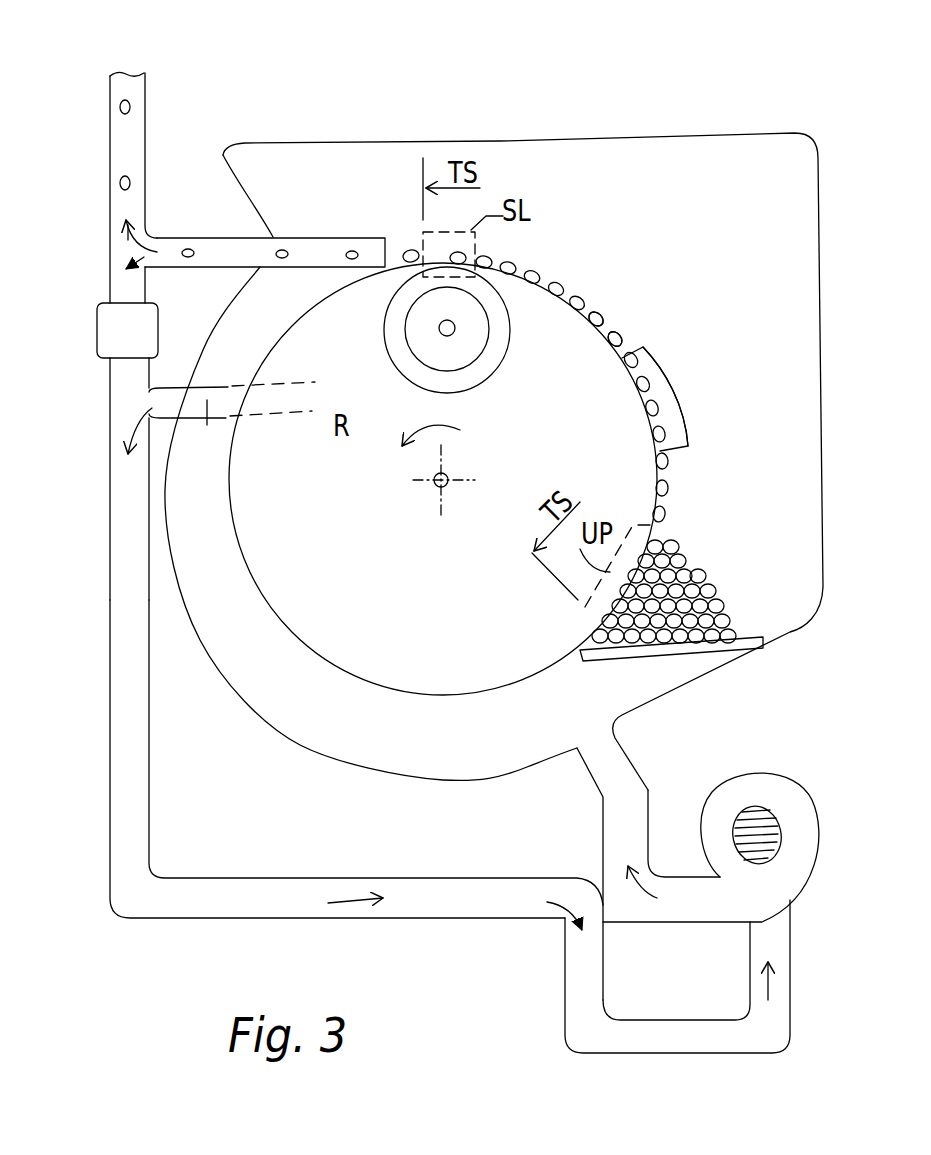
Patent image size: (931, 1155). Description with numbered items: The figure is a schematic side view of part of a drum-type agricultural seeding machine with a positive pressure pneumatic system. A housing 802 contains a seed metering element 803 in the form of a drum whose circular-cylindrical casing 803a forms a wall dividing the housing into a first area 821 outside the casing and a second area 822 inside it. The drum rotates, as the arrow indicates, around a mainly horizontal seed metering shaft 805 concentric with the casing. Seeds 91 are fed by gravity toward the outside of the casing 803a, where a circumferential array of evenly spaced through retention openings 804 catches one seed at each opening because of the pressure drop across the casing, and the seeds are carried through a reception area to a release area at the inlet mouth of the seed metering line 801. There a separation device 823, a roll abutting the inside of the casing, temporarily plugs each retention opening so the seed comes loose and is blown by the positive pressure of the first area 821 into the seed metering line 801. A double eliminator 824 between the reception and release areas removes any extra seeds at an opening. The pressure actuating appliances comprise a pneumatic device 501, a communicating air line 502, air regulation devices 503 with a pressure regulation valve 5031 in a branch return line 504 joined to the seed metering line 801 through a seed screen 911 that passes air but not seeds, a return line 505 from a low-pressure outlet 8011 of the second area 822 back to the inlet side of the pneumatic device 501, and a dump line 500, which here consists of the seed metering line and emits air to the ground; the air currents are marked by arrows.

The dump line 500 is at (121, 148).
The seeds 91 is at (124, 184).
The seed screen 911 is at (119, 253).
The seed metering line 801 is at (315, 236).
The air regulation devices 503 is at (185, 186).
The pressure regulation valve 5031 is at (131, 314).
The branch return line 504 is at (120, 374).
The low-pressure outlet 8011 is at (207, 422).
The return line 505 is at (137, 753).
The housing 802 is at (623, 132).
The circular-cylindrical casing 803a is at (323, 661).
The seed metering element 803 is at (405, 589).
The seed metering shaft 805 is at (448, 487).
The separation device 823 is at (502, 356).
The retention openings 804 is at (588, 326).
The second area 822 is at (595, 462).
The first area 821 is at (740, 379).
The double eliminator 824 is at (664, 346).
The communicating air line 502 is at (597, 787).
The pneumatic device 501 is at (750, 922).